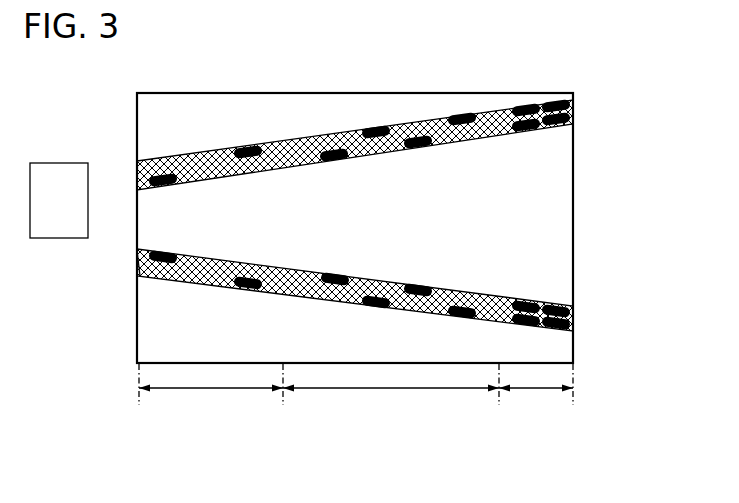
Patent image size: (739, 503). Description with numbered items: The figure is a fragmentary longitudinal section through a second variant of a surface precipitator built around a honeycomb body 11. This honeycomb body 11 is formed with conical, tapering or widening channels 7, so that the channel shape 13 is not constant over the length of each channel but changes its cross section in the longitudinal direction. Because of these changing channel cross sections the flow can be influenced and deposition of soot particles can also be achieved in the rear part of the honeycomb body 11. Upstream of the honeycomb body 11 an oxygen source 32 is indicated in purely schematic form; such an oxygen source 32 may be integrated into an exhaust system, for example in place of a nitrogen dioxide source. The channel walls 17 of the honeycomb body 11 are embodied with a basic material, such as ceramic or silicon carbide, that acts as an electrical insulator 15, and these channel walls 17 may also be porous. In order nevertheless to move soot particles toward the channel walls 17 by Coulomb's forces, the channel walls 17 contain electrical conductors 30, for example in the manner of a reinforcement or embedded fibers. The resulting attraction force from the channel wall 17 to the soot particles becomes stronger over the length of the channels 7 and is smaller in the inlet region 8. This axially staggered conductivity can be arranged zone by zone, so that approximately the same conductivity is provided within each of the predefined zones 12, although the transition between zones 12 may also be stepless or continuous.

The channels 7 is at (557, 209).
The inlet region 8 is at (109, 145).
The honeycomb body 11 is at (573, 362).
The zones 12 is at (197, 388).
The channel shape 13 is at (560, 282).
The electrical insulator 15 is at (137, 258).
The channel walls 17 is at (573, 322).
The electrical conductors 30 is at (232, 286).
The oxygen source 32 is at (75, 220).